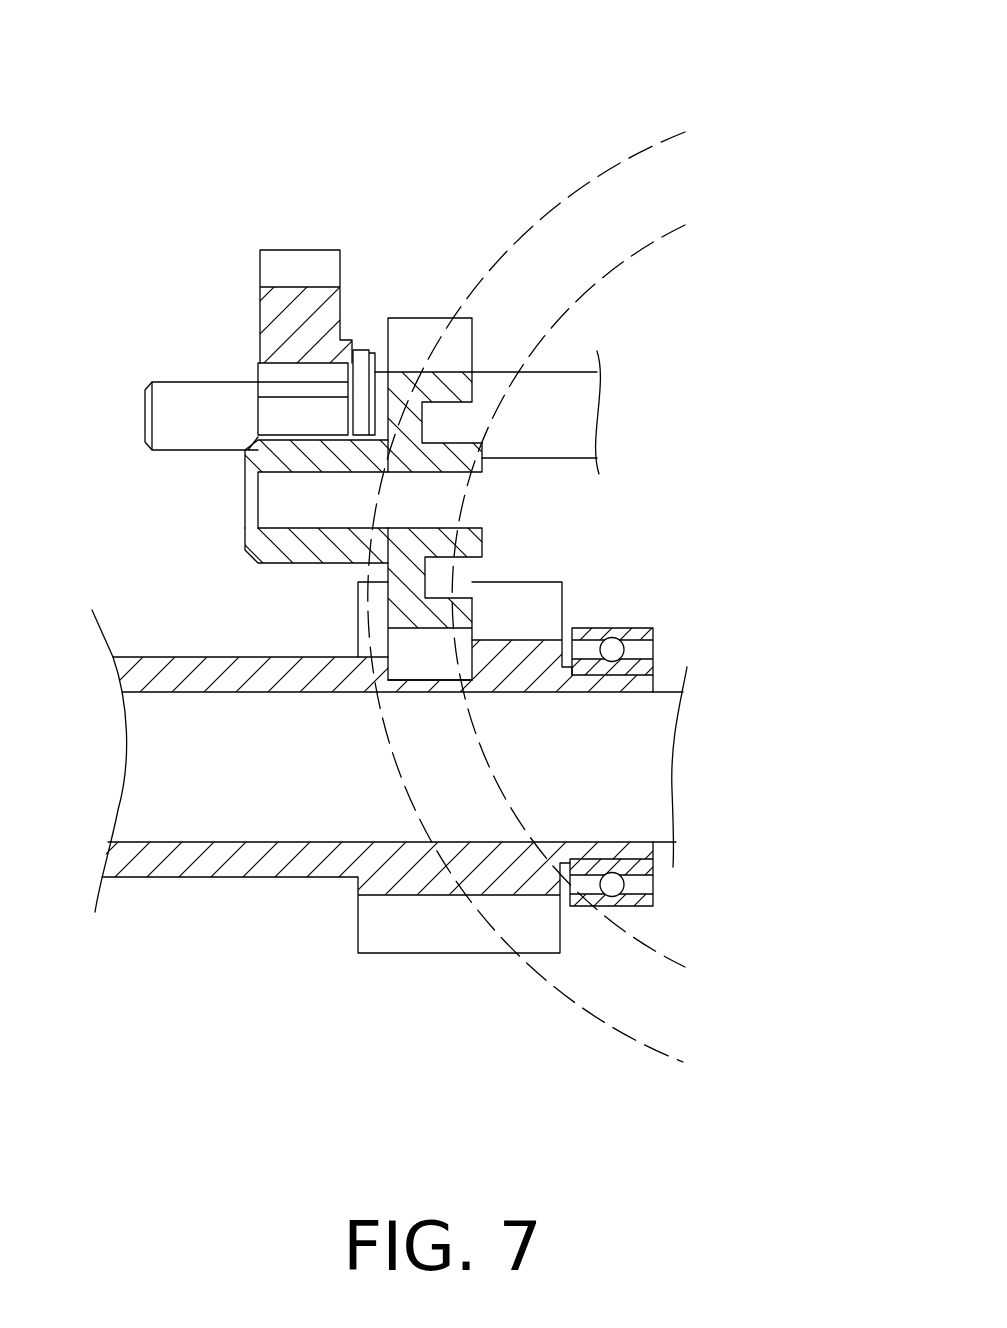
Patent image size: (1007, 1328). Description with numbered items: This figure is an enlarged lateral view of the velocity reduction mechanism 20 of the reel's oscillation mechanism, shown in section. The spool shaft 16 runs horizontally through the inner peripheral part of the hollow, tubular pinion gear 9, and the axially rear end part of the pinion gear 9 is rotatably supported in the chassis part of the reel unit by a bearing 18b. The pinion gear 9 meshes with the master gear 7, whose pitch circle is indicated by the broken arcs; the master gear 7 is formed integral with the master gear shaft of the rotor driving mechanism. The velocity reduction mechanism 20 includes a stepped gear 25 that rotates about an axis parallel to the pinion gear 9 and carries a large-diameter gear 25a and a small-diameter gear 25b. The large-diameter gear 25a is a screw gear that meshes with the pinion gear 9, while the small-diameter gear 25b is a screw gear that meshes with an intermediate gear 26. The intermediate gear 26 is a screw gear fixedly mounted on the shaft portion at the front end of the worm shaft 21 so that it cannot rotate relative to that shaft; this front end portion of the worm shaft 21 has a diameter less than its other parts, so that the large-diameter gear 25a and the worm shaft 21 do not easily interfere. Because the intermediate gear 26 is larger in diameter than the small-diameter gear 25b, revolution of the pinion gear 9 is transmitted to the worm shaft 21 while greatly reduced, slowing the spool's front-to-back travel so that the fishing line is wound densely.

The master gear 7 is at (593, 177).
The pinion gear 9 is at (538, 602).
The spool shaft 16 is at (631, 717).
The bearing 18b is at (610, 648).
The velocity reduction mechanism 20 is at (392, 208).
The worm shaft 21 is at (589, 388).
The stepped gear 25 is at (319, 439).
The large-diameter gear 25a is at (424, 336).
The small-diameter gear 25b is at (302, 553).
The intermediate gear 26 is at (298, 267).